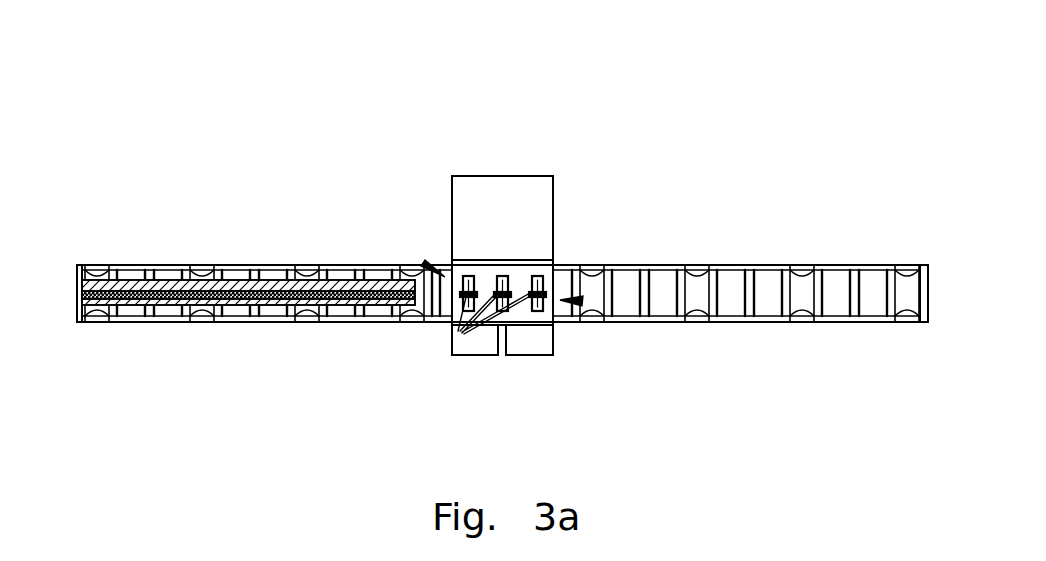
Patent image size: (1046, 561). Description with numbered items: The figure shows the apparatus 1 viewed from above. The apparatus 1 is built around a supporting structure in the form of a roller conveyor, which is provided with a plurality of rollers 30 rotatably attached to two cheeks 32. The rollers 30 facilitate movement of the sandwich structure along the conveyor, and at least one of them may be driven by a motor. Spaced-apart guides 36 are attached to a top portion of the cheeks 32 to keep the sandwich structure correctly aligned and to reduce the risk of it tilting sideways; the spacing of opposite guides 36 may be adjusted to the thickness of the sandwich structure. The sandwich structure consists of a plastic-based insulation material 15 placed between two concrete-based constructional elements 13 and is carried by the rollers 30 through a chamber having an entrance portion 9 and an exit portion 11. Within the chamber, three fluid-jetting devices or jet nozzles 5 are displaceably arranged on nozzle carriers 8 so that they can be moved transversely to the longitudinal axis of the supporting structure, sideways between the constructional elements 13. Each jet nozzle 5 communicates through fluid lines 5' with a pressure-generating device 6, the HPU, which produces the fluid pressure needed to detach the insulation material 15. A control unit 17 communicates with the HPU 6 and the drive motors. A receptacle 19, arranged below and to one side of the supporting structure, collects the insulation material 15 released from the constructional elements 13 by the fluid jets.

The apparatus 1 is at (575, 95).
The fluid-jetting devices 5 is at (530, 219).
The fluid lines 5' is at (469, 373).
The pressure-generating device 6 is at (462, 356).
The nozzle carriers 8 is at (545, 302).
The entrance portion 9 is at (423, 263).
The exit portion 11 is at (583, 301).
The concrete-based constructional element 13 is at (160, 288).
The plastic-based insulation material 15 is at (133, 296).
The control unit 17 is at (528, 356).
The receptacle 19 is at (452, 207).
The rollers 30 is at (752, 296).
The cheeks 32 is at (878, 265).
The guides 36 is at (800, 268).